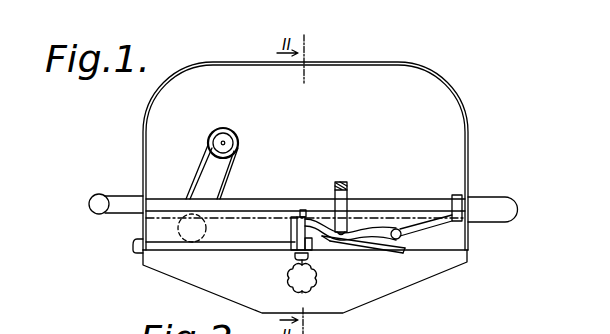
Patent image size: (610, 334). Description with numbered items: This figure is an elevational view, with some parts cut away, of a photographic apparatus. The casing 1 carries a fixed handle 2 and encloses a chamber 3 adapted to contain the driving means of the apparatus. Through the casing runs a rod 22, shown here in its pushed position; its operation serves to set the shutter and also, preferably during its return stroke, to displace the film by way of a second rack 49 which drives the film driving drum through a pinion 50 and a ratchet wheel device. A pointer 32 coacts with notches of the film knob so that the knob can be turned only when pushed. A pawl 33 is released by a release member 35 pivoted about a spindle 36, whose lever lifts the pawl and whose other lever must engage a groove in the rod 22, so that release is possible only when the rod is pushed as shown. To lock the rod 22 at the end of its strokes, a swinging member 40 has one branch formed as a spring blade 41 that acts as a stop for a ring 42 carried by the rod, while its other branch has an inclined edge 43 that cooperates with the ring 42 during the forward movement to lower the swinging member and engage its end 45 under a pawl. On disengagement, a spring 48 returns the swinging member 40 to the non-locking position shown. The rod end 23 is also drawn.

The casing 1 is at (437, 77).
The fixed handle 2 is at (489, 203).
The chamber 3 is at (372, 66).
The rod 22 is at (158, 198).
The shaft end knob 23 is at (104, 193).
The pointer 32 is at (297, 262).
The pawl 33 is at (308, 287).
The release member 35 is at (135, 243).
The spindle 36 is at (215, 243).
The swinging member 40 is at (382, 243).
The spring blade 41 is at (447, 233).
The ring 42 is at (466, 175).
The inclined edge 43 is at (360, 222).
The end of swinging member 45 is at (308, 219).
The spring 48 is at (360, 251).
The second rack 49 is at (255, 217).
The pinion 50 is at (180, 231).